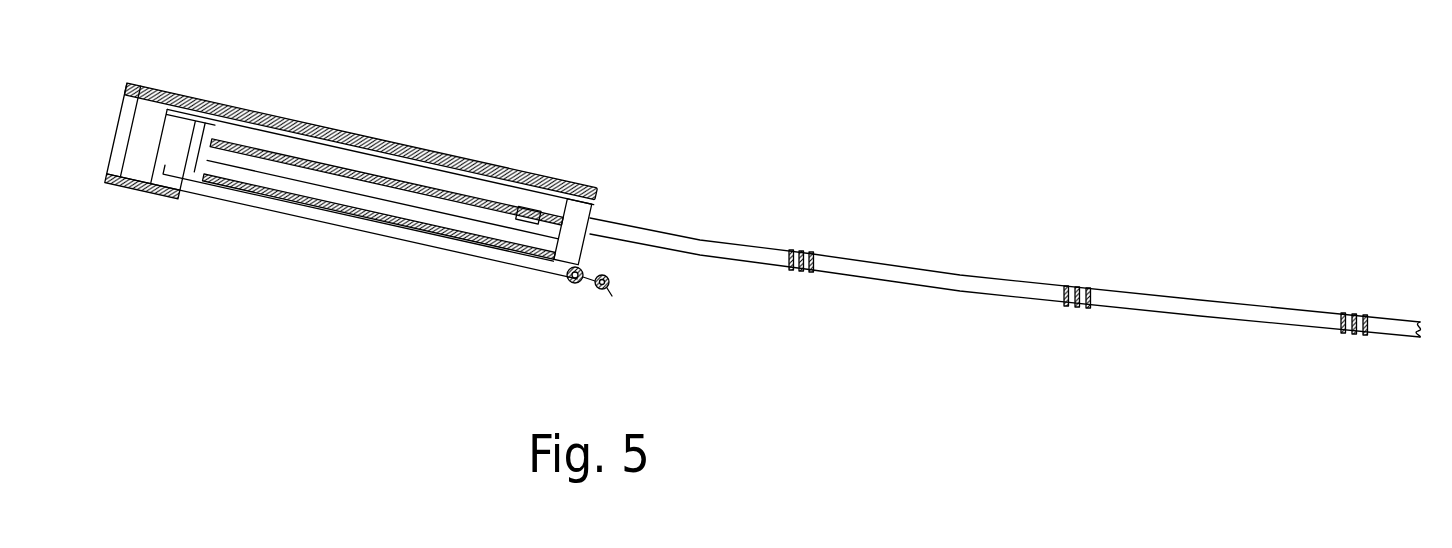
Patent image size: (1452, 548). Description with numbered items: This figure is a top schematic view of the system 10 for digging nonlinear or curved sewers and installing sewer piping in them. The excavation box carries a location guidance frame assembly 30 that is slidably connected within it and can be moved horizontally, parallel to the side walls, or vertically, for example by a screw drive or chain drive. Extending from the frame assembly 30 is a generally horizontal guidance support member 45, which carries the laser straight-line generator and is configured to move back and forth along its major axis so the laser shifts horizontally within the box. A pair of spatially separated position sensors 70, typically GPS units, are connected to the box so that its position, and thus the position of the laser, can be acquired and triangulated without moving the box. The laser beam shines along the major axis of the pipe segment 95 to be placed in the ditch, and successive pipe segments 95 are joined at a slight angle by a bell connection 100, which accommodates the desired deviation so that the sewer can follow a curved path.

The system 10 is at (405, 315).
The location guidance frame assembly 30 is at (456, 153).
The guidance support member 45 is at (240, 147).
The position sensors 70 is at (603, 292).
The pipe segment 95 is at (975, 278).
The bell connection 100 is at (807, 253).